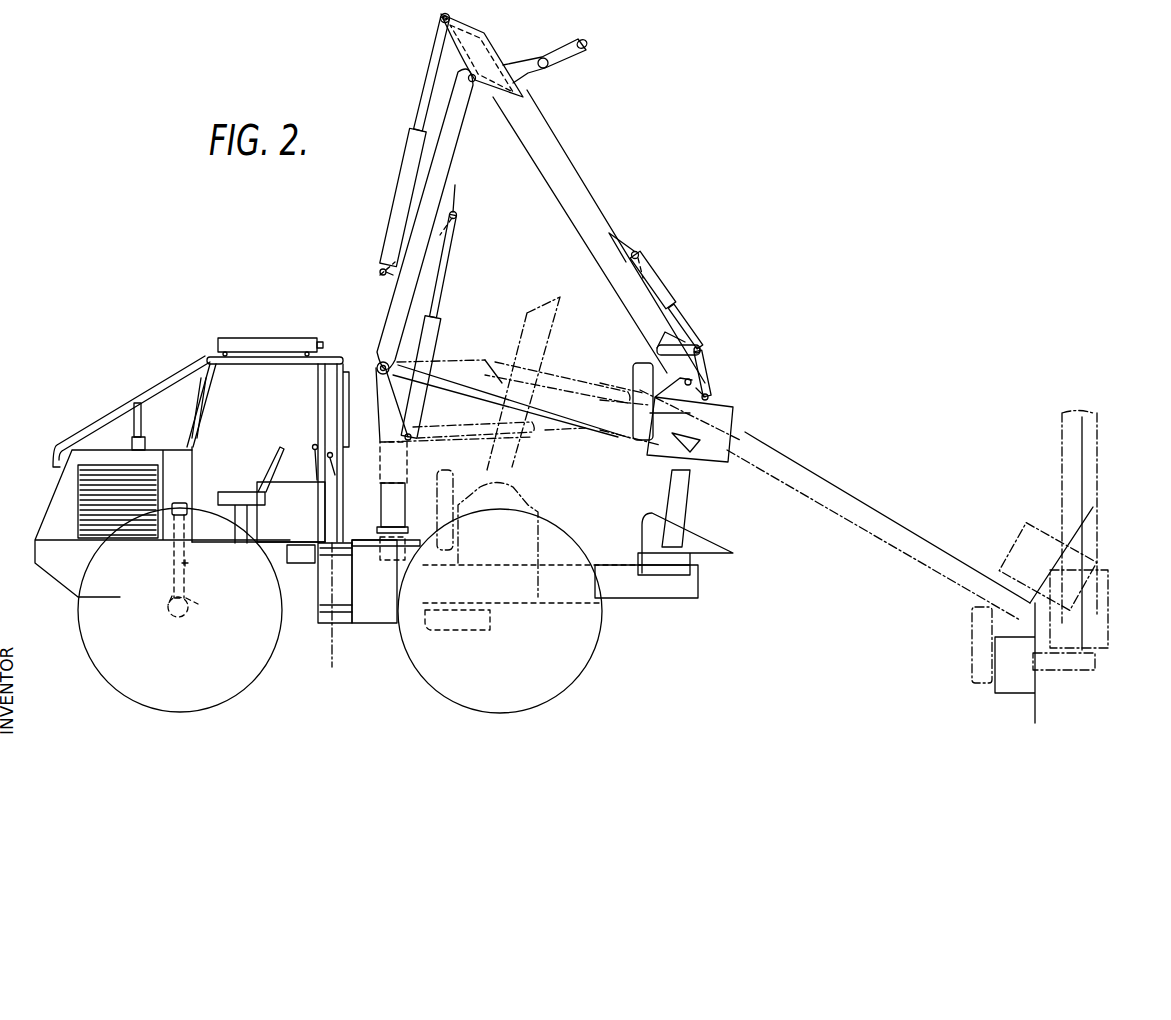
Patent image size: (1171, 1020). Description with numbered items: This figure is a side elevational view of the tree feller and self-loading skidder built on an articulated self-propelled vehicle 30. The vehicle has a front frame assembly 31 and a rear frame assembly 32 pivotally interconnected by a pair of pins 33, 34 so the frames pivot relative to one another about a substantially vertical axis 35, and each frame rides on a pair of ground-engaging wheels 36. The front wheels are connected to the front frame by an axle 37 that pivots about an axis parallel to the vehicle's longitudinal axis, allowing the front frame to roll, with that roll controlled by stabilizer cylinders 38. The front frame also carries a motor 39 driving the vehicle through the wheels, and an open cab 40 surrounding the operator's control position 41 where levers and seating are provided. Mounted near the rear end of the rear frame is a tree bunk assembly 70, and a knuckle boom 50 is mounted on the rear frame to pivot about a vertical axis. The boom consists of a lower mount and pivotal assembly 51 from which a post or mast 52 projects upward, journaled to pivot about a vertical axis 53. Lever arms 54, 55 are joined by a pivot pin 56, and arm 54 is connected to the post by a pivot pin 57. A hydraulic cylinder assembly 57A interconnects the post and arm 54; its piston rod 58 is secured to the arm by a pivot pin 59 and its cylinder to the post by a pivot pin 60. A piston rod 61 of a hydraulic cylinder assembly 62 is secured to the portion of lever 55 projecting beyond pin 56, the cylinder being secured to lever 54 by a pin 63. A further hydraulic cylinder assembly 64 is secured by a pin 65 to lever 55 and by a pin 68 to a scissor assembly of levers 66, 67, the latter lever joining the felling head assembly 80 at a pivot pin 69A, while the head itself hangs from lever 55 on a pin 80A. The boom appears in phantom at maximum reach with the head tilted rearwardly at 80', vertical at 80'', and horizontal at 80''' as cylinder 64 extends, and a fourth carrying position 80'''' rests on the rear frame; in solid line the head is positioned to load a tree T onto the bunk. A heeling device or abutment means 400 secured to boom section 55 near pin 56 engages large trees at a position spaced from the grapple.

The articulated self-propelled vehicle 30 is at (575, 586).
The front frame assembly 31 is at (280, 552).
The rear frame assembly 32 is at (627, 596).
The pin 33 is at (339, 543).
The pin 34 is at (337, 602).
The vertical axis 35 is at (332, 667).
The ground-engaging wheels 36 is at (256, 676).
The axle 37 is at (190, 602).
The stabilizer cylinders 38 is at (190, 563).
The motor 39 is at (93, 461).
The open cab 40 is at (248, 350).
The operator's control position 41 is at (273, 382).
The knuckle boom 50 is at (595, 188).
The lower mount and pivotal assembly 51 is at (388, 633).
The post or mast 52 is at (397, 500).
The vertical axis 53 is at (396, 522).
The lever arm 54 is at (418, 272).
The lever arm 55 is at (548, 142).
The pivot pin 56 is at (476, 82).
The pivot pin 57 is at (379, 366).
The hydraulic cylinder assembly 57A is at (438, 329).
The piston rod 58 is at (450, 250).
The pivot pin 59 is at (456, 213).
The pivot pin 60 is at (410, 439).
The piston rod 61 is at (436, 54).
The hydraulic cylinder assembly 62 is at (399, 168).
The pin 63 is at (381, 271).
The hydraulic cylinder assembly 64 is at (680, 297).
The pin 65 is at (638, 252).
The lever 66 is at (682, 352).
The lever 67 is at (706, 367).
The pin 68 is at (700, 349).
The pivot pin 69A is at (710, 397).
The tree bunk assembly 70 is at (707, 526).
The felling head assembly 80 is at (815, 491).
The pin 80A is at (693, 382).
The felling head assembly first position 80' is at (1047, 547).
The felling head assembly second position 80'' is at (1088, 588).
The felling head assembly third position 80''' is at (979, 663).
The felling head assembly fourth position 80'''' is at (510, 533).
The heeling device or abutment means 400 is at (530, 75).
The tree T is at (1097, 492).